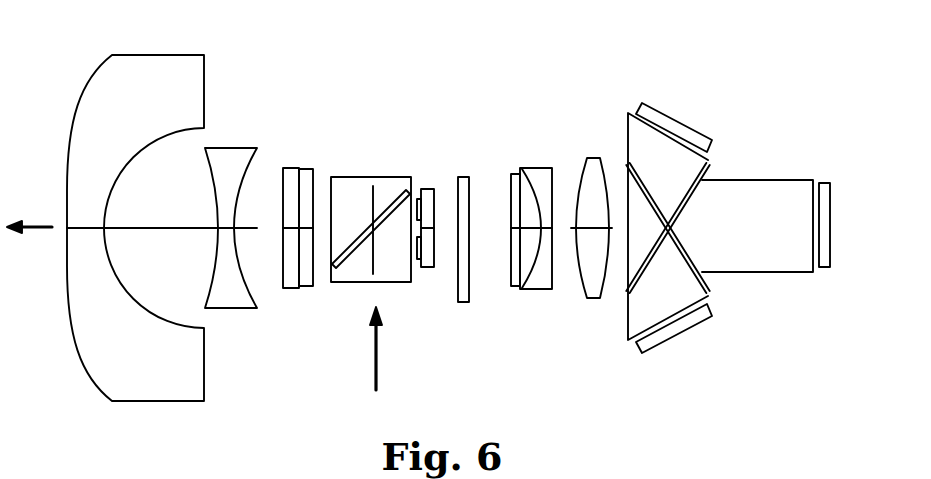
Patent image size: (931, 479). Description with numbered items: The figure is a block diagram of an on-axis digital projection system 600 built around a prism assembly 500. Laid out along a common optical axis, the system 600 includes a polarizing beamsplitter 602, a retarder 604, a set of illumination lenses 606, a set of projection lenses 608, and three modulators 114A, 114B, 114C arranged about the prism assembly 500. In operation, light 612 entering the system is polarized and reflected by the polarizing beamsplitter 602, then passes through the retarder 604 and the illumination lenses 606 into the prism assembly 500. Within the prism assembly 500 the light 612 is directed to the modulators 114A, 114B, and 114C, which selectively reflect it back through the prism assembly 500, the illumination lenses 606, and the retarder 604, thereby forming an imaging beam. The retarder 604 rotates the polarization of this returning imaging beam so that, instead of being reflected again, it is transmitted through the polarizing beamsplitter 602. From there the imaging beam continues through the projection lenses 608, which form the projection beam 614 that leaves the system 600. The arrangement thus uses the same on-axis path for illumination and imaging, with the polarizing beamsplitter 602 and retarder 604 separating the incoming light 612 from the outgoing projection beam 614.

The on-axis digital projection system 600 is at (132, 425).
The polarizing beamsplitter 602 is at (367, 176).
The retarder 604 is at (469, 287).
The set of illumination lenses 606 is at (420, 148).
The set of projection lenses 608 is at (65, 55).
The light 612 is at (378, 352).
The projection beam 614 is at (35, 229).
The prism assembly 500 is at (740, 314).
The modulator 114A is at (670, 114).
The modulator 114B is at (825, 185).
The modulator 114C is at (637, 348).